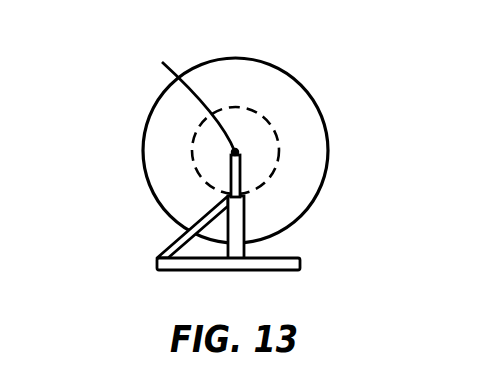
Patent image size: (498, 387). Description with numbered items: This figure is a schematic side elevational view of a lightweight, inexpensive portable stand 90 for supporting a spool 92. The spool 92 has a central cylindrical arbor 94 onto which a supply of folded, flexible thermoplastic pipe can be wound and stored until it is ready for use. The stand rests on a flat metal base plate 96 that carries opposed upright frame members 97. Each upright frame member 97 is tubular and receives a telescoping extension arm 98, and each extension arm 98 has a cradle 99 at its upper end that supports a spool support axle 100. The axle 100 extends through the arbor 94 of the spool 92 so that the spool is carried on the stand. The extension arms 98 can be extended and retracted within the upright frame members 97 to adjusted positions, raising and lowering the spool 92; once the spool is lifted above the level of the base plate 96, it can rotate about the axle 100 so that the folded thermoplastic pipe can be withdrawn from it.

The portable stand 90 is at (136, 246).
The spool 92 is at (310, 97).
The central cylindrical arbor 94 is at (279, 170).
The flat metal base plate 96 is at (273, 269).
The upright frame member 97 is at (243, 220).
The telescoping extension arm 98 is at (230, 175).
The cradle 99 is at (233, 152).
The spool support axle 100 is at (186, 90).